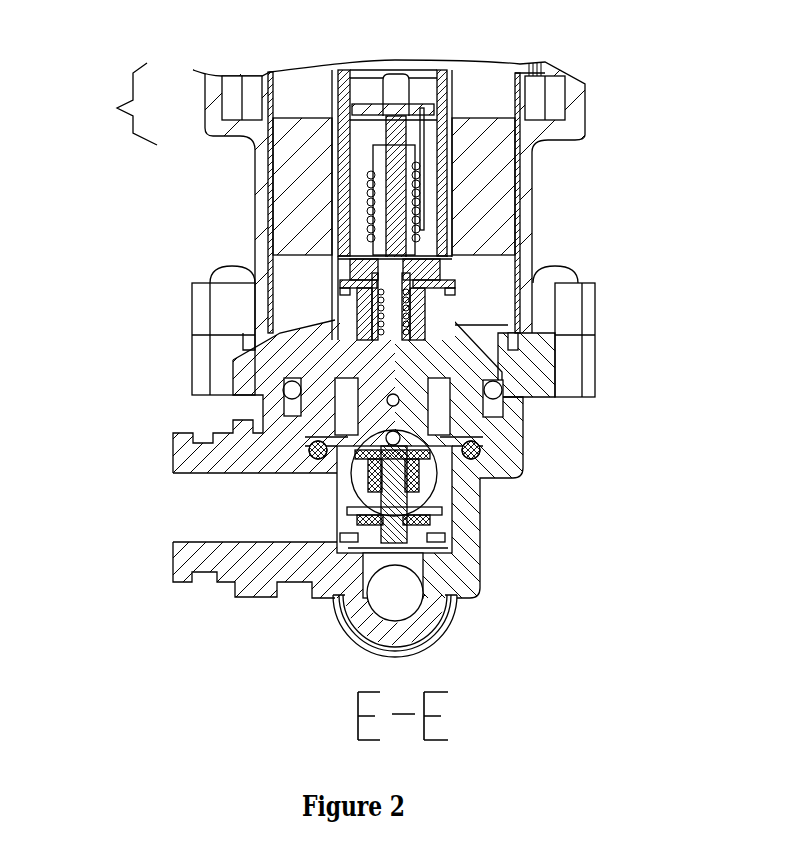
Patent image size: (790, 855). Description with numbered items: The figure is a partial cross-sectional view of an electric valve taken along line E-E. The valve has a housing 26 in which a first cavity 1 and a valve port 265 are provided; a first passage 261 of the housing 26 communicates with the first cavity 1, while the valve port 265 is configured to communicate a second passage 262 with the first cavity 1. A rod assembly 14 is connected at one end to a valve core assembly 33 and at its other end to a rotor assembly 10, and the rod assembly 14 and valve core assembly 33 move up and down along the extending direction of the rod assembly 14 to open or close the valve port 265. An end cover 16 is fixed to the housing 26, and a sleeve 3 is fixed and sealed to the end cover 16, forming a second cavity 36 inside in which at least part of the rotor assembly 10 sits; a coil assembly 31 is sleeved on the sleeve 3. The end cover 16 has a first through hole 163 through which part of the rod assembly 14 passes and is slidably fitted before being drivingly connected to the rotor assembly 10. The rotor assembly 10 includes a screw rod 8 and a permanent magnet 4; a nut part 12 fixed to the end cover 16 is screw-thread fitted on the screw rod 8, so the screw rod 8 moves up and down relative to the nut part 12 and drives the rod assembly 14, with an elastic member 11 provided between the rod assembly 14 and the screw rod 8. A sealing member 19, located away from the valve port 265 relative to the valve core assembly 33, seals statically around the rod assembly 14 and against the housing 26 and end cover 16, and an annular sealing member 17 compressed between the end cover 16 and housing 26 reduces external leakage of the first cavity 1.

The rotor assembly 10 is at (102, 104).
The permanent magnet 4 is at (350, 132).
The screw rod 8 is at (393, 165).
The second cavity 36 is at (360, 185).
The nut part 12 is at (378, 228).
The sleeve 3 is at (452, 72).
The coil assembly 31 is at (495, 205).
The elastic member 11 is at (375, 308).
The first through hole 163 is at (385, 403).
The end cover 16 is at (483, 350).
The annular sealing member 17 is at (496, 393).
The rod assembly 14 is at (398, 415).
The sealing member 19 is at (447, 452).
The first cavity 1 is at (443, 492).
The valve core assembly 33 is at (427, 540).
The valve port 265 is at (408, 530).
The housing 26 is at (448, 613).
The first passage 261 is at (272, 493).
The second passage 262 is at (392, 593).